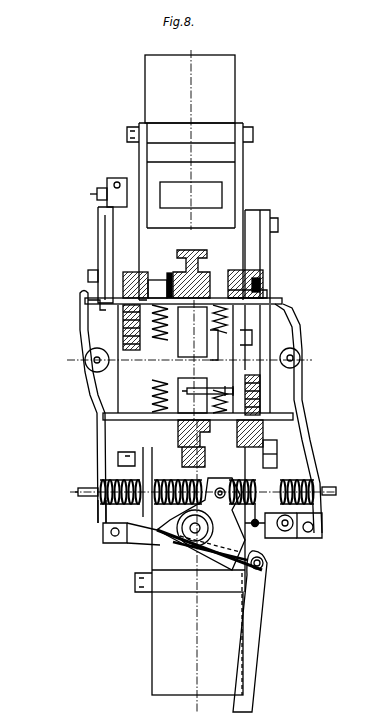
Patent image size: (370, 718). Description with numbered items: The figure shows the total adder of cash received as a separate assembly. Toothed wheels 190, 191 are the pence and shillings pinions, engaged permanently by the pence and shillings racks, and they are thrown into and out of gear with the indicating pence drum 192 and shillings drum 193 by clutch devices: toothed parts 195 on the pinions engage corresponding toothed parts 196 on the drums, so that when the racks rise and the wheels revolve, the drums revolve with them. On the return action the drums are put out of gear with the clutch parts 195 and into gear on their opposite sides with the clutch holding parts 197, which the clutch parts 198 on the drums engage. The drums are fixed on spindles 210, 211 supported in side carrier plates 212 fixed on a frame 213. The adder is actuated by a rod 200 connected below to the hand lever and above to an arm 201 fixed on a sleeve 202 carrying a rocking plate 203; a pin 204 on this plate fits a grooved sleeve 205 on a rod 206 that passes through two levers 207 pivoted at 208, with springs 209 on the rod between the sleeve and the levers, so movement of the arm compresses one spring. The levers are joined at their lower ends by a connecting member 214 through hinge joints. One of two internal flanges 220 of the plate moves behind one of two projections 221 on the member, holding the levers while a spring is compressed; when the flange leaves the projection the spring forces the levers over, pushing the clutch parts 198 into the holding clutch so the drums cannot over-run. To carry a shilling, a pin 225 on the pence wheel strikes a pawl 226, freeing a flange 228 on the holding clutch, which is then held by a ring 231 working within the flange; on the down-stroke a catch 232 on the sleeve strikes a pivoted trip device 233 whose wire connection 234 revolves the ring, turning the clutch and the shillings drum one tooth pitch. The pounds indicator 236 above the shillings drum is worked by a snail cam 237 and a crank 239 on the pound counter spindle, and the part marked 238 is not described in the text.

The toothed wheel 190 is at (300, 400).
The toothed wheel 191 is at (123, 322).
The pence drum 192 is at (192, 396).
The shillings drum 193 is at (192, 332).
The toothed clutch part 195 is at (150, 288).
The toothed clutch part 196 is at (160, 338).
The clutch holding part 197 is at (262, 262).
The clutch part 198 is at (208, 276).
The rod 200 is at (250, 665).
The arm 201 is at (232, 563).
The sleeve 202 is at (200, 552).
The rocking plate 203 is at (105, 508).
The pin 204 is at (322, 516).
The grooved sleeve 205 is at (265, 456).
The rod 206 is at (80, 490).
The lever 207 is at (98, 437).
The pivot 208 is at (93, 366).
The spring 209 is at (108, 481).
The spindle 210 is at (103, 415).
The spindle 211 is at (283, 300).
The side carrier plate 212 is at (243, 172).
The frame 213 is at (213, 93).
The connecting member 214 is at (128, 544).
The internal flange 220 is at (103, 532).
The projection 221 is at (180, 541).
The pin 225 is at (262, 381).
The pawl 226 is at (226, 376).
The flange 228 is at (262, 278).
The ring 231 is at (262, 290).
The catch 232 is at (265, 565).
The trip device 233 is at (262, 527).
The wire connection 234 is at (265, 345).
The pounds indicator 236 is at (191, 195).
The snail cam 237 is at (82, 312).
The lug 238 is at (88, 278).
The crank 239 is at (107, 205).